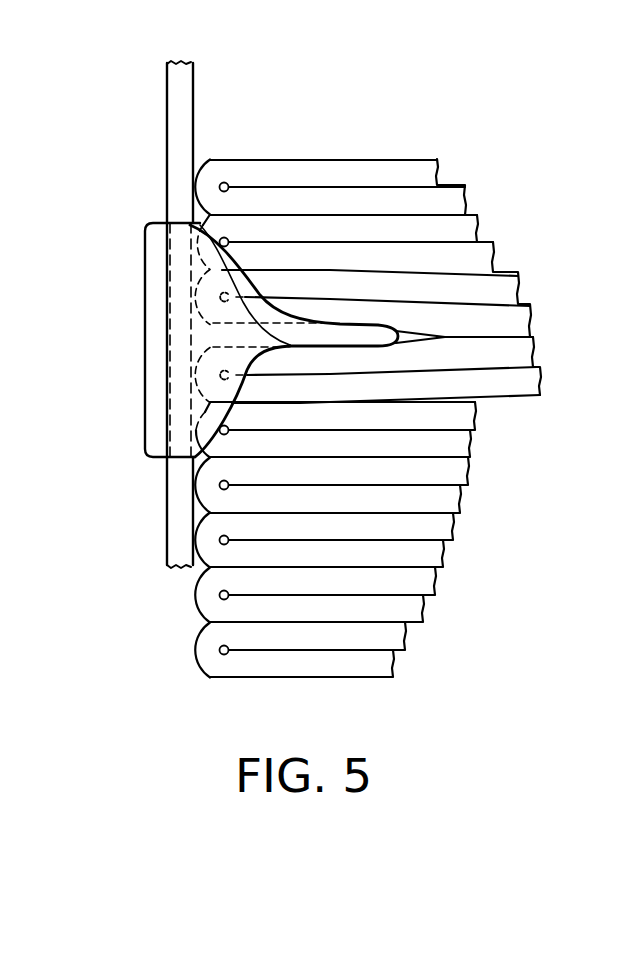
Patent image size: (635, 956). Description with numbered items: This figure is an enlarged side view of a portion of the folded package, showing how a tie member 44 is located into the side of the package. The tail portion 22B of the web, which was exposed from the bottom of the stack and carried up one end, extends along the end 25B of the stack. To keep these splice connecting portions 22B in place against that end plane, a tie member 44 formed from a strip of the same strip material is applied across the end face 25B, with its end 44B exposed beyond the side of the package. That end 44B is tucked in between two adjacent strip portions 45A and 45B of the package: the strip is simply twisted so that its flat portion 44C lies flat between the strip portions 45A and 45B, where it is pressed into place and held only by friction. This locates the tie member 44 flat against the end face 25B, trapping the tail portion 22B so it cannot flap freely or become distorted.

The tail portion of the web 22B is at (199, 117).
The end of the stack 25B is at (353, 418).
The tie member 44 is at (303, 340).
The end of the tie member 44B is at (160, 353).
The flat portion of the tie member 44C is at (403, 351).
The strip portion 45A is at (522, 314).
The strip portion 45B is at (523, 352).